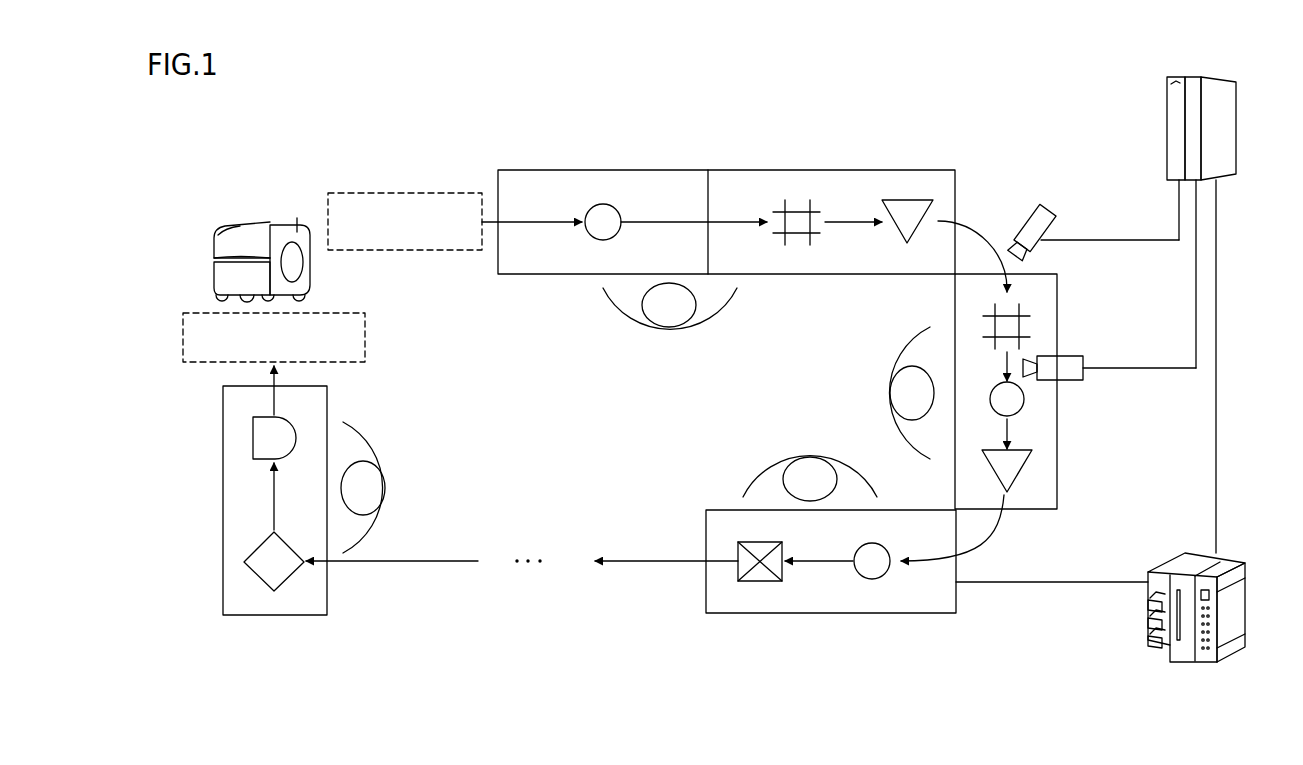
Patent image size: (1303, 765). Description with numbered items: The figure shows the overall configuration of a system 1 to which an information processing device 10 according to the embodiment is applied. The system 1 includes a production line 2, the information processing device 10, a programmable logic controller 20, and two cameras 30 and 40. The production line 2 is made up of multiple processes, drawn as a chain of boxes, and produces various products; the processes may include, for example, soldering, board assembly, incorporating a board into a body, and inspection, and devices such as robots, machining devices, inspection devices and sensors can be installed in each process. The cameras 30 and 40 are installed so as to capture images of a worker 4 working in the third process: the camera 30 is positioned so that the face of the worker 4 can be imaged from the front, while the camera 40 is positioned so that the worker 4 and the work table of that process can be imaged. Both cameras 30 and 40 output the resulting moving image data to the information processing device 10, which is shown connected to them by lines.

The system 1 is at (428, 107).
The production line 2 is at (531, 158).
The worker 4 is at (893, 354).
The information processing device 10 is at (1167, 132).
The programmable logic controller 20 is at (1205, 662).
The camera 30 is at (1073, 381).
The camera 40 is at (1034, 210).